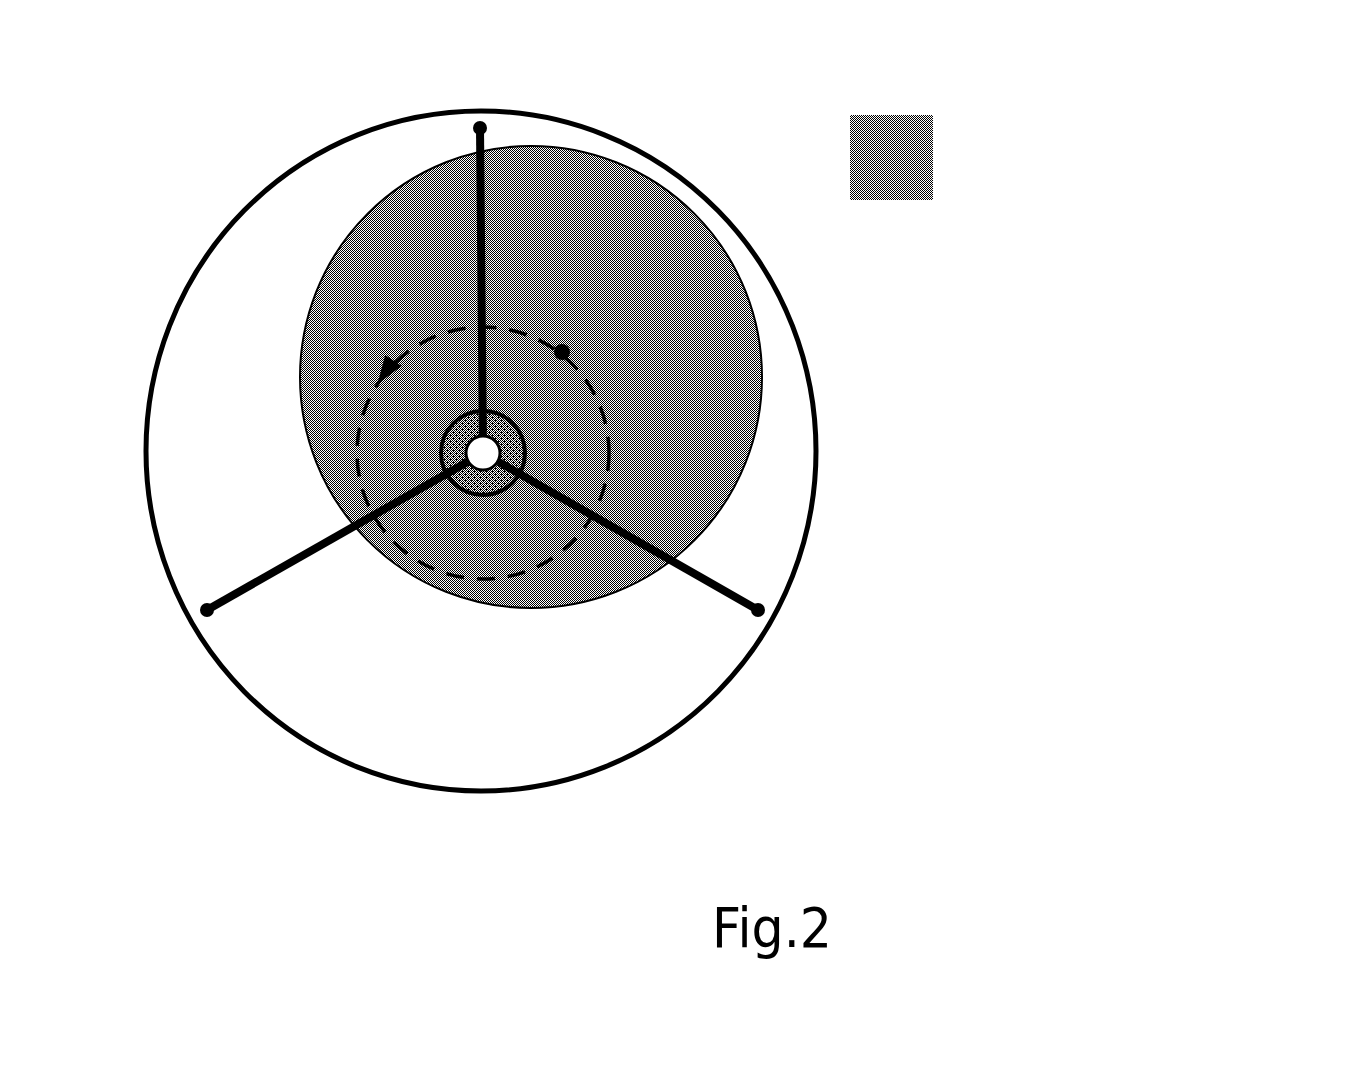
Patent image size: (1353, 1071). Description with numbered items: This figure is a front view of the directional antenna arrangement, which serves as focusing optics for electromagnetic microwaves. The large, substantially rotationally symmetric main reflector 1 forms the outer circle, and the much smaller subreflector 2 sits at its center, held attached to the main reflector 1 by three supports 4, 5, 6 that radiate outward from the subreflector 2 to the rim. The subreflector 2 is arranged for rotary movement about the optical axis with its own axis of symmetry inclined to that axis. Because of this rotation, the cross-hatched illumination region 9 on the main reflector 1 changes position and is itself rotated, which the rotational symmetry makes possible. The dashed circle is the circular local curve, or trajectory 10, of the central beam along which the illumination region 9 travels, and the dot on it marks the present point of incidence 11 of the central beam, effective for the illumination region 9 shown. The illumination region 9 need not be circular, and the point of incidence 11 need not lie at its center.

The main reflector 1 is at (680, 680).
The subreflector 2 is at (550, 464).
The support 4 is at (472, 146).
The support 5 is at (700, 585).
The support 6 is at (298, 557).
The illumination region 9 is at (630, 190).
The trajectory 10 is at (634, 434).
The point of incidence of the central beam 11 is at (592, 346).